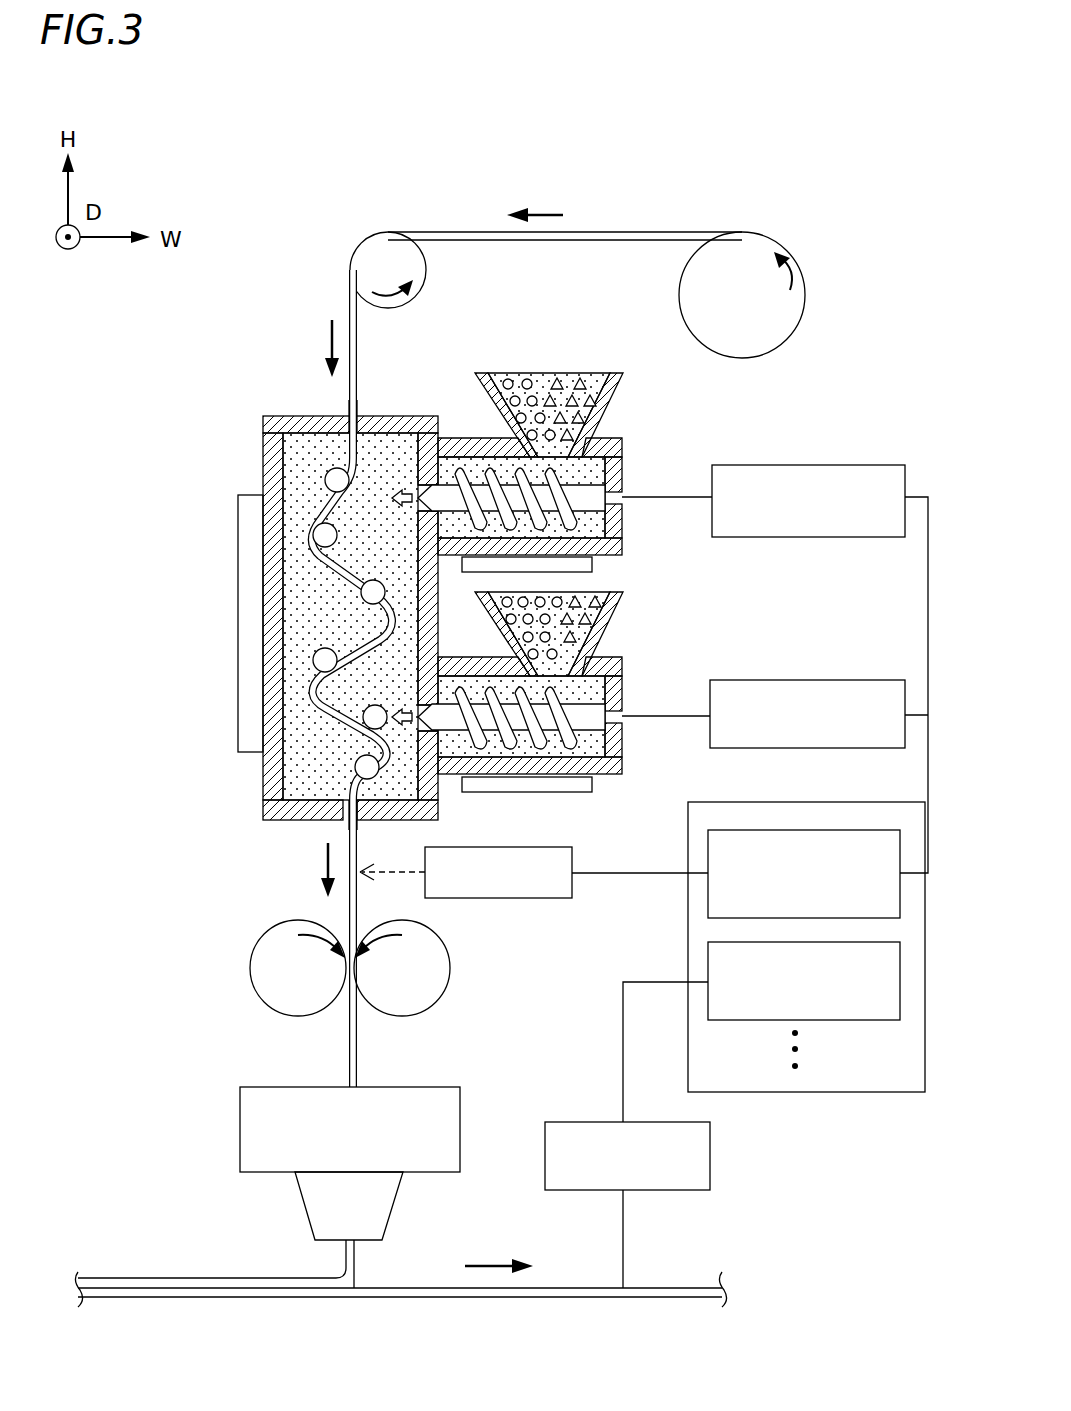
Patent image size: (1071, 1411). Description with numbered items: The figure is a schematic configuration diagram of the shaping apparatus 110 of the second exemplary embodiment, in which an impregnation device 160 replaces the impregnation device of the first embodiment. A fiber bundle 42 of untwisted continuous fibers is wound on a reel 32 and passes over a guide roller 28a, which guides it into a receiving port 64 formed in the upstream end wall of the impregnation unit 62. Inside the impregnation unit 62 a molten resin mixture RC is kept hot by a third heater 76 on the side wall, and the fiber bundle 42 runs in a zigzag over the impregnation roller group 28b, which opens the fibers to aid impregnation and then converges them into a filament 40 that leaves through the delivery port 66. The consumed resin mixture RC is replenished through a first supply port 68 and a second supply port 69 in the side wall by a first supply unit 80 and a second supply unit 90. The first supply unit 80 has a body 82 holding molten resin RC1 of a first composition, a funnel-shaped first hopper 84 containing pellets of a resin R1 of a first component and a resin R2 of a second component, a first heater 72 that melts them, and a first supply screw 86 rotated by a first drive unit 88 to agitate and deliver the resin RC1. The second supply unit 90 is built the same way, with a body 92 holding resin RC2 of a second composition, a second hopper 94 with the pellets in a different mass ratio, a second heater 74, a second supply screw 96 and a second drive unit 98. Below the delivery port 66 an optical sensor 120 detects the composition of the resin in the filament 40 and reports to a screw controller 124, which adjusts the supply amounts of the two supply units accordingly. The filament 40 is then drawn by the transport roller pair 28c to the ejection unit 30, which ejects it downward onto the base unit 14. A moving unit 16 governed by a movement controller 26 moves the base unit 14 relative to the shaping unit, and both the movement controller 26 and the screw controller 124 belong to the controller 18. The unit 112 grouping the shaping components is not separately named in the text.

The base unit 14 is at (518, 1300).
The moving unit 16 is at (712, 1152).
The controller 18 is at (762, 986).
The movement controller 26 is at (714, 970).
The guide roller 28a is at (380, 240).
The impregnation roller group 28b is at (320, 537).
The transport roller pair 28c is at (383, 1005).
The ejection unit 30 is at (240, 1135).
The reel 32 is at (742, 240).
The filament 40 is at (345, 908).
The fiber bundle 42 is at (625, 232).
The impregnation unit 62 is at (300, 580).
The receiving port 64 is at (360, 420).
The delivery port 66 is at (355, 818).
The first supply port 68 is at (440, 455).
The second supply port 69 is at (466, 792).
The first heater 72 is at (595, 565).
The second heater 74 is at (592, 786).
The third heater 76 is at (238, 630).
The first supply unit 80 is at (648, 434).
The body 82 is at (622, 526).
The first hopper 84 is at (620, 373).
The first supply screw 86 is at (605, 490).
The first drive unit 88 is at (842, 394).
The second supply unit 90 is at (648, 669).
The body 92 is at (622, 750).
The second hopper 94 is at (625, 592).
The second supply screw 96 is at (605, 705).
The second drive unit 98 is at (787, 680).
The shaping apparatus 110 is at (262, 165).
The filament forming unit 112 is at (262, 300).
The optical sensor 120 is at (500, 898).
The screw controller 124 is at (714, 897).
The impregnation device 160 is at (240, 408).
The resin mixture RC is at (290, 775).
The resin of a first composition RC1 is at (620, 450).
The resin of a second composition RC2 is at (669, 648).
The resin of a first component R1 is at (556, 373).
The resin of a second component R2 is at (508, 373).